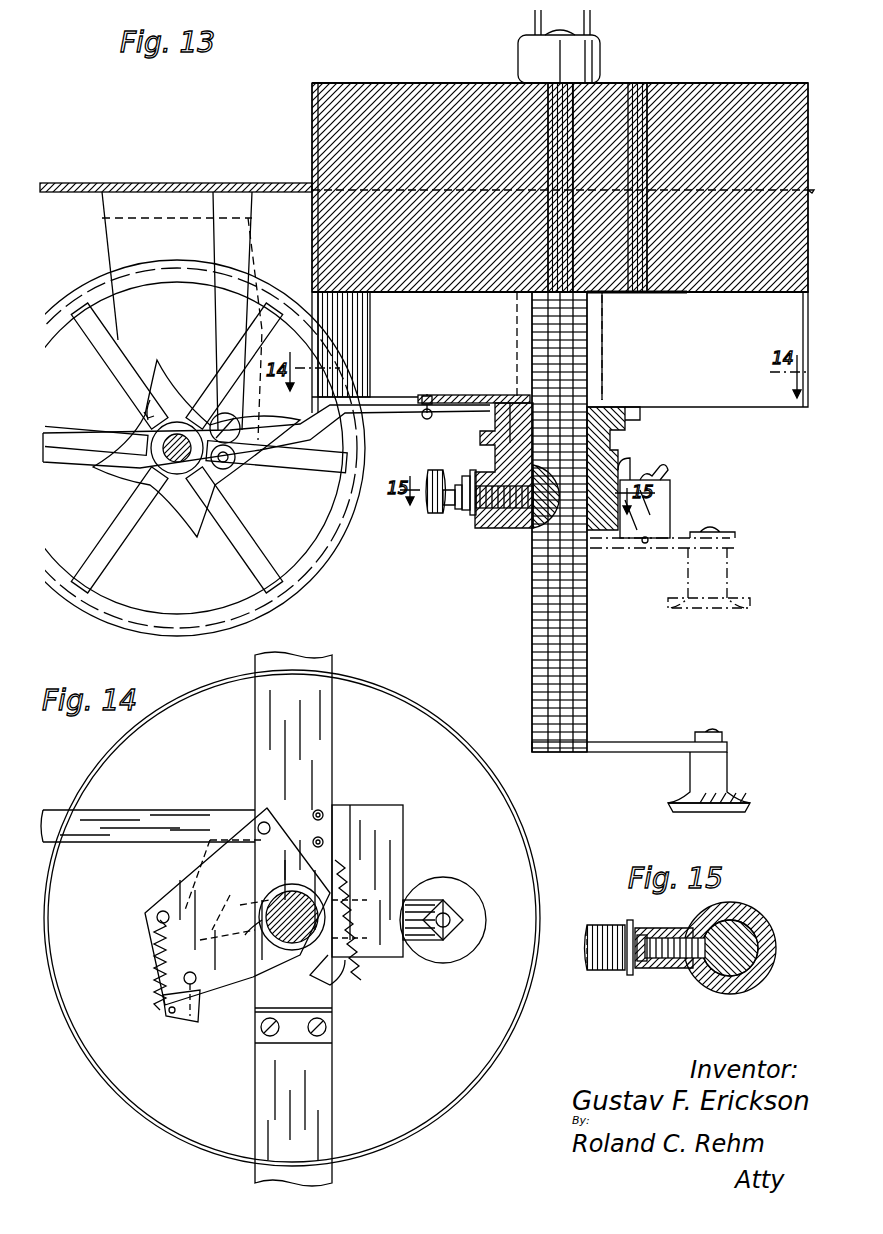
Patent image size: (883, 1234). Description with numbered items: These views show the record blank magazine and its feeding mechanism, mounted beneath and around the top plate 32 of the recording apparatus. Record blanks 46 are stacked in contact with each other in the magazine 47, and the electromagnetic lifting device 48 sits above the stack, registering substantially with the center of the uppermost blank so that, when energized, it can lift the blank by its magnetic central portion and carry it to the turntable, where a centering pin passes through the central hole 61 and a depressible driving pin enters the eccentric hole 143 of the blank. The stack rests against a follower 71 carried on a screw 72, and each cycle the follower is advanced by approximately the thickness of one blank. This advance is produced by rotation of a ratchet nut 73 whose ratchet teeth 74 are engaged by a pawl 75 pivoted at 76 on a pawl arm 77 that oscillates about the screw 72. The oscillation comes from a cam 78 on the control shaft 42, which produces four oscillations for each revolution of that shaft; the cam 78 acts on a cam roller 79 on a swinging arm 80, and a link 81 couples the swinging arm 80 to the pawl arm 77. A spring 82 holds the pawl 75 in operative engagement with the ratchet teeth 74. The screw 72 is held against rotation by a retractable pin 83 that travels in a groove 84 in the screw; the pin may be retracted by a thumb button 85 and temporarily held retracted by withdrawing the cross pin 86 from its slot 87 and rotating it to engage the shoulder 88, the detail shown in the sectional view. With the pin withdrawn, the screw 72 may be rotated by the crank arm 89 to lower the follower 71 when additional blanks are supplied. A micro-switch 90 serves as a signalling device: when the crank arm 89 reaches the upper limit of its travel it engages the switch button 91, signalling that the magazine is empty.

In FIG. 13, the top plate 32 is at (196, 183).
In FIG. 13, the control shaft 42 is at (165, 455).
In FIG. 13, the record blanks 46 is at (700, 100).
In FIG. 13, the magazine 47 is at (312, 118).
In FIG. 13, the electromagnetic lifting device 48 is at (600, 72).
In FIG. 13, the central hole 61 is at (556, 83).
In FIG. 13, the follower 71 is at (650, 300).
In FIG. 13, the screw 72 is at (532, 376).
In FIG. 14, the screw 72 is at (325, 945).
In FIG. 15, the screw 72 is at (748, 910).
In FIG. 13, the ratchet nut 73 is at (495, 430).
In FIG. 14, the ratchet nut 73 is at (330, 965).
In FIG. 13, the ratchet teeth 74 is at (632, 412).
In FIG. 14, the ratchet teeth 74 is at (340, 877).
In FIG. 14, the pawl 75 is at (195, 988).
In FIG. 14, the pawl pivot 76 is at (180, 1010).
In FIG. 13, the pawl arm 77 is at (446, 395).
In FIG. 14, the pawl arm 77 is at (178, 890).
In FIG. 13, the cam 78 is at (210, 505).
In FIG. 13, the cam roller 79 is at (235, 465).
In FIG. 13, the swinging arm 80 is at (213, 332).
In FIG. 13, the link 81 is at (372, 412).
In FIG. 14, the link 81 is at (176, 790).
In FIG. 14, the spring 82 is at (158, 968).
In FIG. 13, the retractable pin 83 is at (512, 502).
In FIG. 15, the retractable pin 83 is at (690, 968).
In FIG. 13, the groove 84 is at (545, 515).
In FIG. 14, the groove 84 is at (268, 920).
In FIG. 15, the groove 84 is at (720, 986).
In FIG. 13, the thumb button 85 is at (430, 506).
In FIG. 13, the cross pin 86 is at (473, 470).
In FIG. 15, the cross pin 86 is at (630, 922).
In FIG. 13, the slot 87 is at (458, 505).
In FIG. 15, the slot 87 is at (627, 965).
In FIG. 13, the shoulder 88 is at (466, 476).
In FIG. 15, the shoulder 88 is at (645, 932).
In FIG. 13, the crank arm 89 is at (652, 742).
In FIG. 13, the micro-switch 90 is at (660, 490).
In FIG. 14, the micro-switch 90 is at (443, 920).
In FIG. 13, the switch button 91 is at (645, 545).
In FIG. 13, the eccentric hole 143 is at (640, 85).